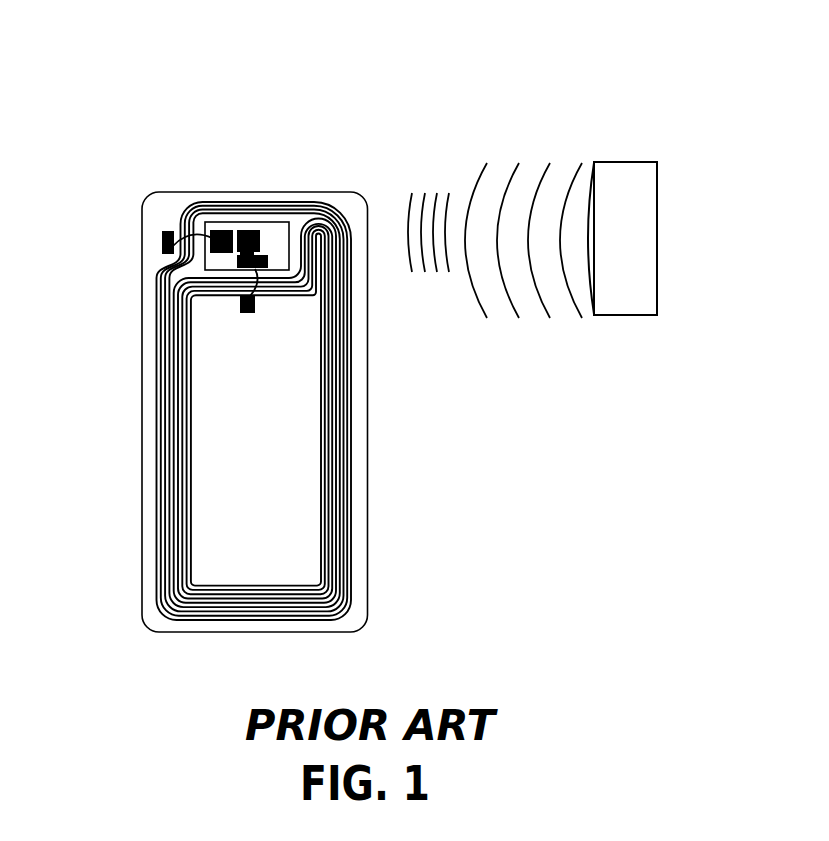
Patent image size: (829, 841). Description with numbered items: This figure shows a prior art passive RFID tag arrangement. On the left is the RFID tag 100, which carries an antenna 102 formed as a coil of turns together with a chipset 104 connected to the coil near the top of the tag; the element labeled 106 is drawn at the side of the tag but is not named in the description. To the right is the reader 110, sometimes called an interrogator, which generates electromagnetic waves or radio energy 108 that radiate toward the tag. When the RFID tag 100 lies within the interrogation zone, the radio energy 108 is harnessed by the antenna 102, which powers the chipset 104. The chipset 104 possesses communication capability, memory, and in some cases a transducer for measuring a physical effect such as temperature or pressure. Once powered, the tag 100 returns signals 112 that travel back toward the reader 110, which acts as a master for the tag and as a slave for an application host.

The RFID tag 100 is at (253, 113).
The antenna 102 is at (136, 377).
The chipset 104 is at (272, 223).
The antenna coil 106 is at (368, 395).
The radio energy 108 is at (528, 372).
The reader 110 is at (630, 160).
The signals 112 is at (425, 150).